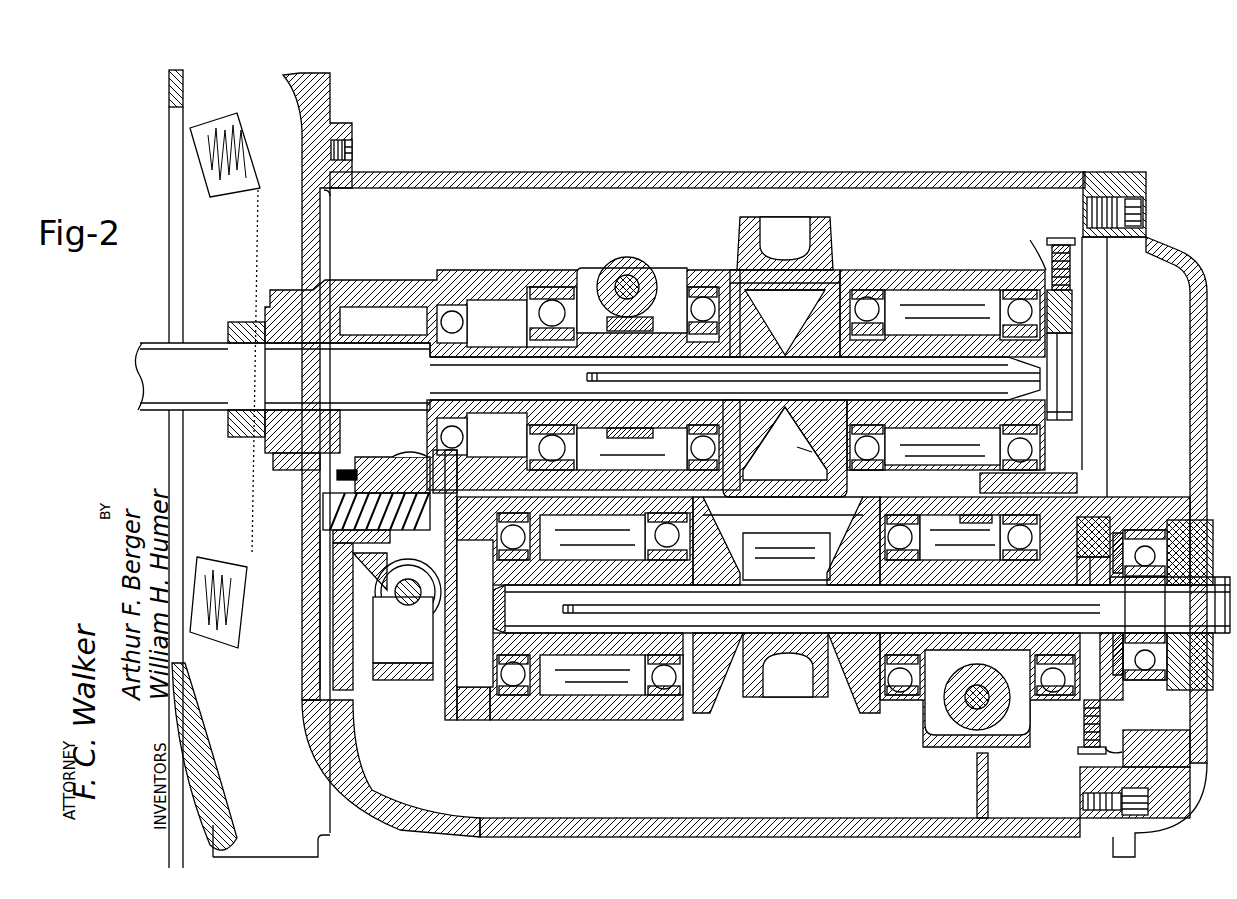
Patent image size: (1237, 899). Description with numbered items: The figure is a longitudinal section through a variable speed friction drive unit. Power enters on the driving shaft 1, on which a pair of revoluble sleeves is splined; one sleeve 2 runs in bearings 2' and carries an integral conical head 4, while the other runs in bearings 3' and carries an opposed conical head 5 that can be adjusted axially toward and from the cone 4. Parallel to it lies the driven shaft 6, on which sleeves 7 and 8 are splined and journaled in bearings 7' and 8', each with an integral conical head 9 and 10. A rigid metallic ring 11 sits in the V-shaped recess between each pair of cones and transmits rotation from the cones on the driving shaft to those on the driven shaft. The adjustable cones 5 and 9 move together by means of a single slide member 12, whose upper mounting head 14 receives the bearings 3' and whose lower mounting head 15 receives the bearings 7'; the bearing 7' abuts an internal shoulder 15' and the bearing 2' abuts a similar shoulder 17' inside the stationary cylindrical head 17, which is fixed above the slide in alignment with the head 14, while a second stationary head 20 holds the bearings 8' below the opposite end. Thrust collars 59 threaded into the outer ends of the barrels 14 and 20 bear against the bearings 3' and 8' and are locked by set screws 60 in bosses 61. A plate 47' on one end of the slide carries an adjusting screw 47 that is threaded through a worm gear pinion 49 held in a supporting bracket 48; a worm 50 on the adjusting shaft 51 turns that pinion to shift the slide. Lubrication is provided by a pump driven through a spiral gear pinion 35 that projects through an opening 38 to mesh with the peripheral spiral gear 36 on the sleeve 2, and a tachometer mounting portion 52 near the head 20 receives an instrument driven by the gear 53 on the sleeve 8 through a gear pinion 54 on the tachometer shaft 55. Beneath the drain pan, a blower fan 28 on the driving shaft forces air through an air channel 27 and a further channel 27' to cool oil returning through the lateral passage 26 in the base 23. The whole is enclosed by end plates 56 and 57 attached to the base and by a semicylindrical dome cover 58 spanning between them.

The driving shaft 1 is at (587, 379).
The revoluble sleeve 2 is at (623, 447).
The bearing 2' is at (623, 290).
The bearing 3' is at (945, 354).
The conical head 4 is at (785, 362).
The conical head 5 is at (785, 438).
The driven shaft 6 is at (861, 605).
The sleeve 7 is at (593, 536).
The bearing 7' is at (590, 674).
The sleeve 8 is at (962, 537).
The bearing 8' is at (974, 702).
The conical head 9 is at (705, 698).
The conical head 10 is at (875, 690).
The rigid metallic ring 11 is at (830, 238).
The slide member 12 is at (783, 537).
The mounting head 14 is at (920, 270).
The mounting head 15 is at (569, 603).
The internal shoulder 15' is at (475, 613).
The cylindrical head 17 is at (671, 363).
The internal shoulder 17' is at (477, 380).
The cylindrical head 20 is at (1115, 497).
The base 23 is at (355, 795).
The lateral oil passage 26 is at (780, 814).
The air channel 27 is at (249, 469).
The channel 27' is at (949, 808).
The blower fan 28 is at (240, 635).
The spiral gear pinion 35 is at (622, 258).
The peripheral spiral gear 36 is at (632, 385).
The opening 38 is at (597, 272).
The adjusting screw 47 is at (349, 591).
The plate 47' is at (461, 515).
The supporting bracket 48 is at (410, 682).
The worm gear pinion 49 is at (383, 463).
The worm 50 is at (412, 620).
The adjusting shaft 51 is at (425, 598).
The tachometer mounting portion 52 is at (1050, 700).
The peripheral spiral gear 53 is at (985, 547).
The gear pinion 54 is at (963, 717).
The tachometer shaft 55 is at (978, 710).
The end plate 56 is at (325, 240).
The end plate 57 is at (1192, 305).
The dome cover 58 is at (545, 172).
The thrust collar 59 is at (1068, 318).
The set screw 60 is at (1060, 238).
The boss 61 is at (1072, 488).